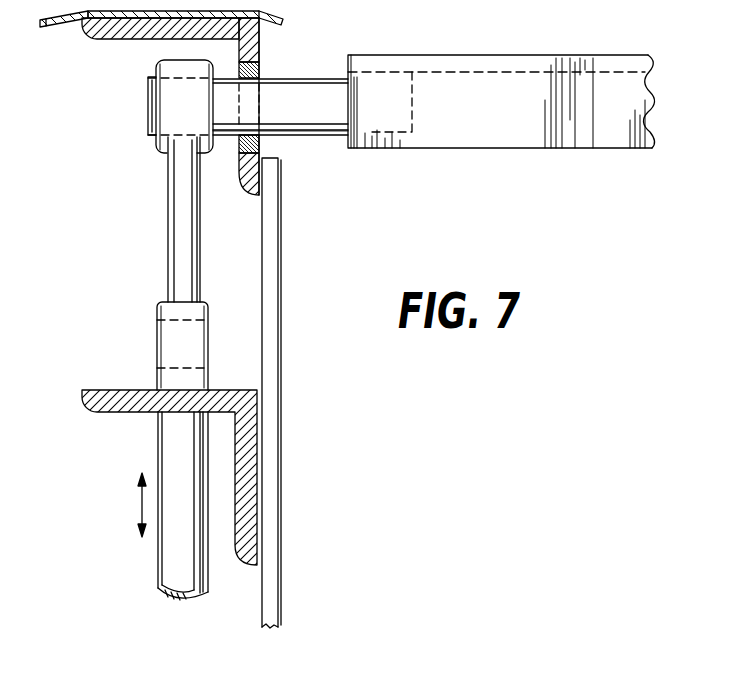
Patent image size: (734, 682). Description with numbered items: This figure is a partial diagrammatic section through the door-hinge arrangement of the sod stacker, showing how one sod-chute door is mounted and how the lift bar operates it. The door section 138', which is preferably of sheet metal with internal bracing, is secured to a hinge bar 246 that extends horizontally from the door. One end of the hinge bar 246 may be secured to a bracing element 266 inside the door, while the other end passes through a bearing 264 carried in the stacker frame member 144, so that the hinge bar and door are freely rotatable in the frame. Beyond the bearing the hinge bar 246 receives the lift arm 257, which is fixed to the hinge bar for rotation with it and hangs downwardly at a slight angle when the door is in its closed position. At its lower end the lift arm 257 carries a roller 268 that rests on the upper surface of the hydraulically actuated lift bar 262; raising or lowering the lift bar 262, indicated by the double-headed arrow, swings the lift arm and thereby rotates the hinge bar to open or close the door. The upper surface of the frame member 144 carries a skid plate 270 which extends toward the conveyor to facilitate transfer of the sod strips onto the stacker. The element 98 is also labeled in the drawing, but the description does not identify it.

The housing 98 is at (423, 9).
The door 138' is at (501, 86).
The frame member 144 is at (252, 28).
The hinge bar 246 is at (306, 100).
The bearing 264 is at (261, 147).
The bracing element 266 is at (394, 113).
The skid plate 270 is at (193, 18).
The lift arm 257 is at (178, 183).
The roller 268 is at (168, 316).
The lift bar 262 is at (129, 398).